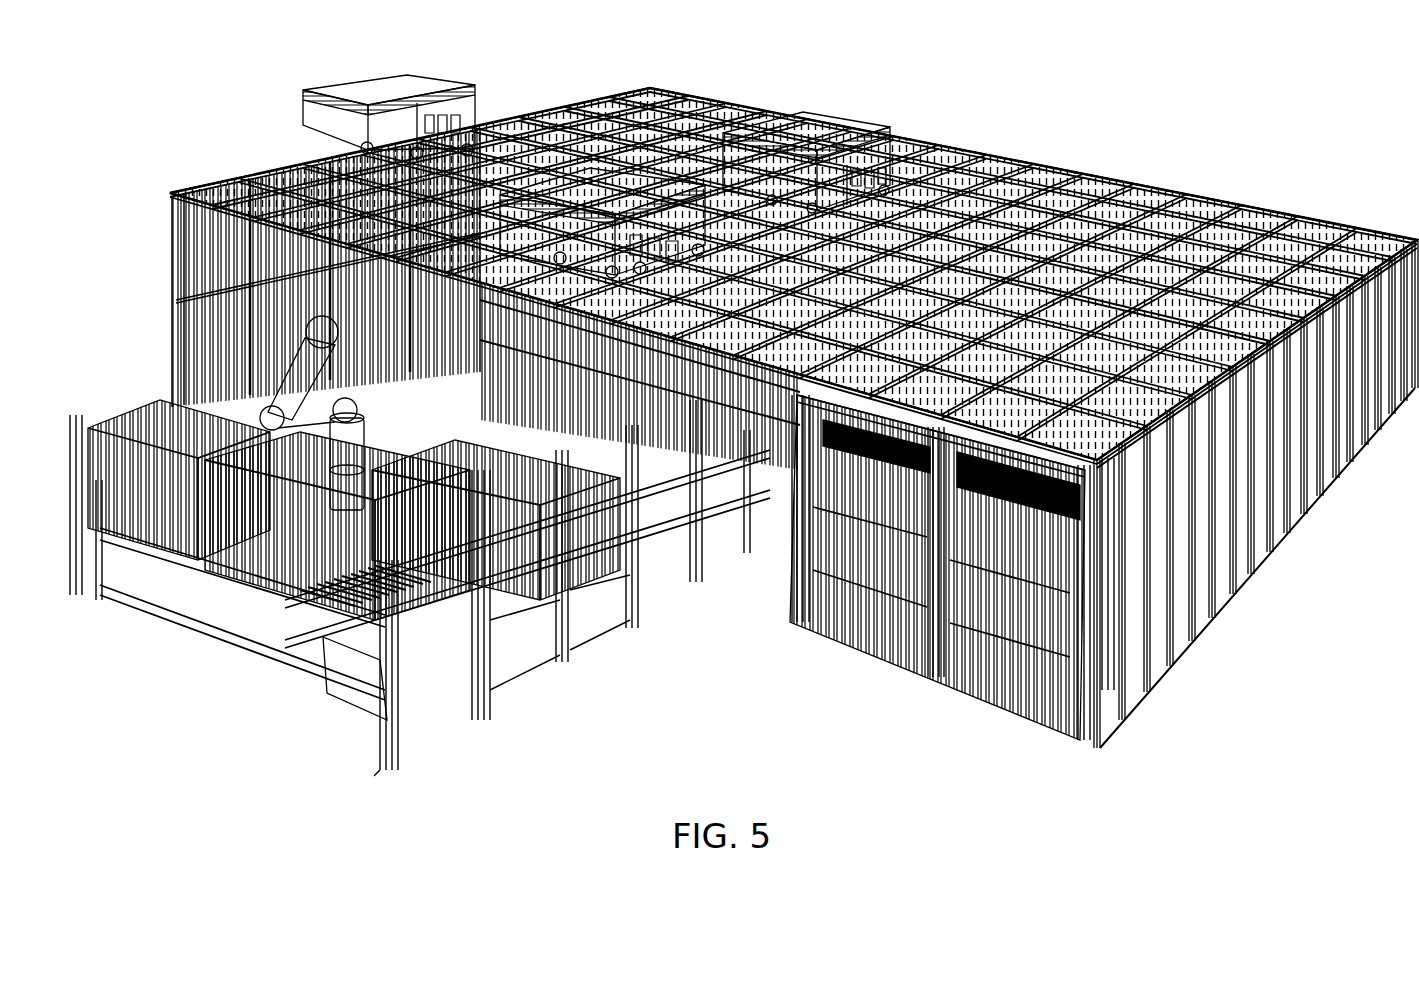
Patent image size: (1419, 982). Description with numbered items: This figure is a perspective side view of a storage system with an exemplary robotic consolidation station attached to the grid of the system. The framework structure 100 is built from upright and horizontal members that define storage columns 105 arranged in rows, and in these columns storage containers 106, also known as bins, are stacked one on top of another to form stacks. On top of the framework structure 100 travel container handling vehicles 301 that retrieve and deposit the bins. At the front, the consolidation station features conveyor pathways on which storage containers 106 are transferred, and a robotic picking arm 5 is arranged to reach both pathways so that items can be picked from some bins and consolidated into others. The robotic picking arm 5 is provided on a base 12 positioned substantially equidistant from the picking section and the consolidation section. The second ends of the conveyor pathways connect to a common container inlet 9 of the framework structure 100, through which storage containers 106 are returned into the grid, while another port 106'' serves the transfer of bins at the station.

The framework structure 100 is at (1226, 171).
The storage columns 105 is at (225, 178).
The container handling vehicle 301 is at (357, 85).
The robotic picking arm 5 is at (190, 342).
The storage containers 106 is at (952, 600).
The output port conveyor frame 106'' is at (250, 595).
The base 12 is at (277, 593).
The common container inlet 9 is at (640, 513).